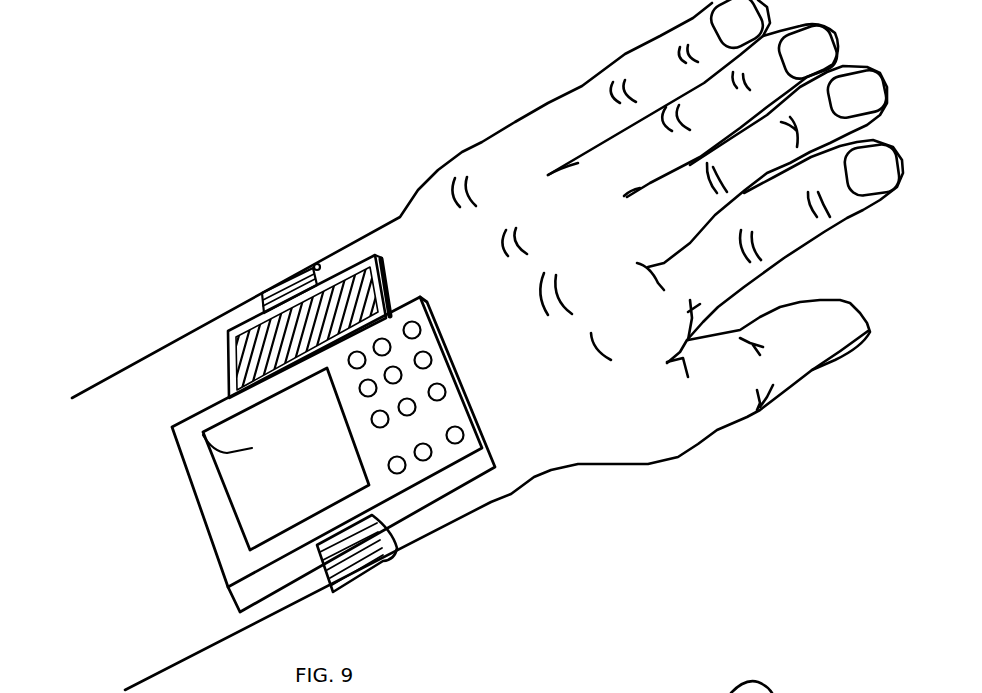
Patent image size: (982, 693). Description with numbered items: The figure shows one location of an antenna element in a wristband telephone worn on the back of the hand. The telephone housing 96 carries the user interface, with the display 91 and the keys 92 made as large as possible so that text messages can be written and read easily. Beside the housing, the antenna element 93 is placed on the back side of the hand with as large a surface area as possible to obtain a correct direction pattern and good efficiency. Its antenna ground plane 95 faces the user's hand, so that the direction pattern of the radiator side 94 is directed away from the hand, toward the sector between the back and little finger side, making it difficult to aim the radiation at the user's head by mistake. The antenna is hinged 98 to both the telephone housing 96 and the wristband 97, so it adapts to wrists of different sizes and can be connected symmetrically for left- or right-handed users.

The display 91 is at (200, 422).
The keys 92 is at (443, 455).
The antenna element 93 is at (233, 343).
The radiator side 94 is at (328, 308).
The antenna ground plane 95 is at (383, 307).
The telephone housing 96 is at (195, 501).
The wristband 97 is at (262, 293).
The hinge 98 is at (230, 398).